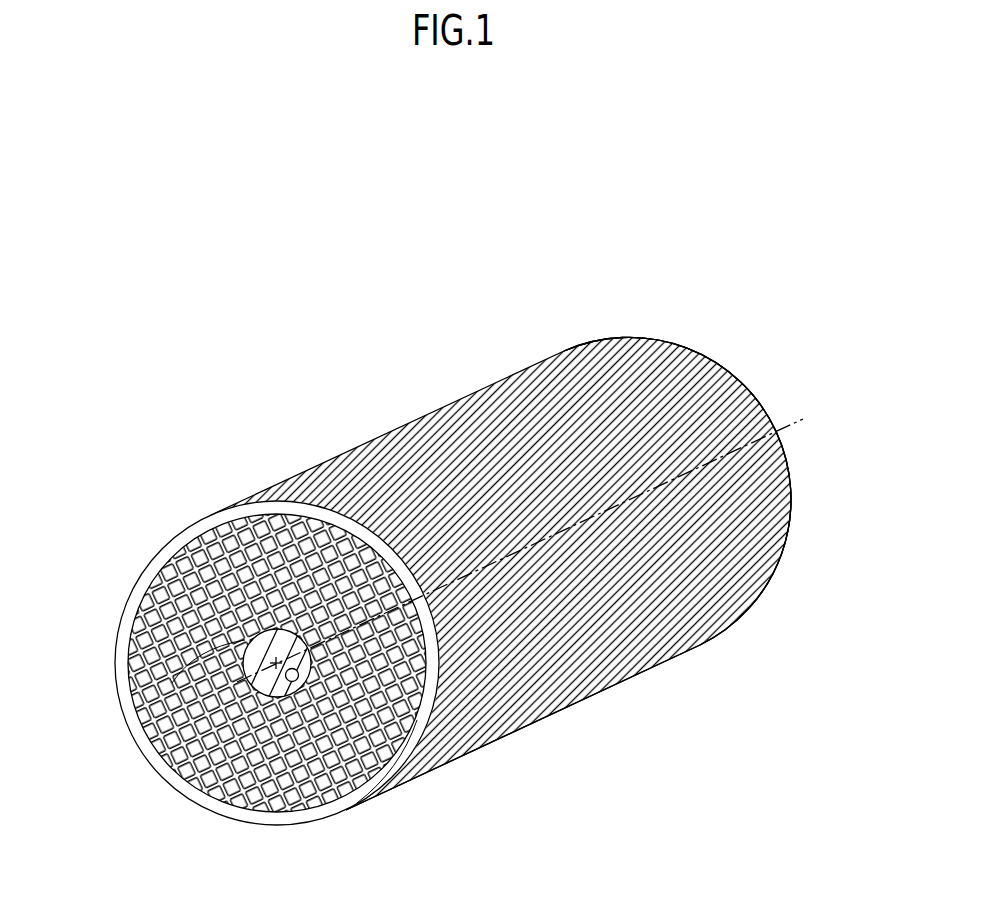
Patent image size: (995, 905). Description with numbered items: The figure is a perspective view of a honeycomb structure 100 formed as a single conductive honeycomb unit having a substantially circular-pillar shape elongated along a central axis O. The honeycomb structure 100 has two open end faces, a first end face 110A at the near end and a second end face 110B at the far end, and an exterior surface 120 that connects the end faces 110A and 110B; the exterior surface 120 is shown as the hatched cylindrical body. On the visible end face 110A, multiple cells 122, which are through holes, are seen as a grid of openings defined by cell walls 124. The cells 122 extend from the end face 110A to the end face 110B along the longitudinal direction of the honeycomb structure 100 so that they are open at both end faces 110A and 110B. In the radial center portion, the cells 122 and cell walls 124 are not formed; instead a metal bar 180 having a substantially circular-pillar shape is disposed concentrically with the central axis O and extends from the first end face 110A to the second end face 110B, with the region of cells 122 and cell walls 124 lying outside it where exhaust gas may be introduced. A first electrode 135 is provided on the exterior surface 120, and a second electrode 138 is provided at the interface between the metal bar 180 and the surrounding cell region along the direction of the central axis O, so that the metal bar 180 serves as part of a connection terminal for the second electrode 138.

The honeycomb structure 100 is at (526, 230).
The first end face 110A is at (120, 559).
The second end face 110B is at (796, 393).
The exterior surface 120 is at (428, 432).
The cell 122 is at (360, 740).
The cell wall 124 is at (228, 730).
The first electrode 135 is at (597, 647).
The second electrode 138 is at (302, 695).
The metal bar 180 is at (133, 715).